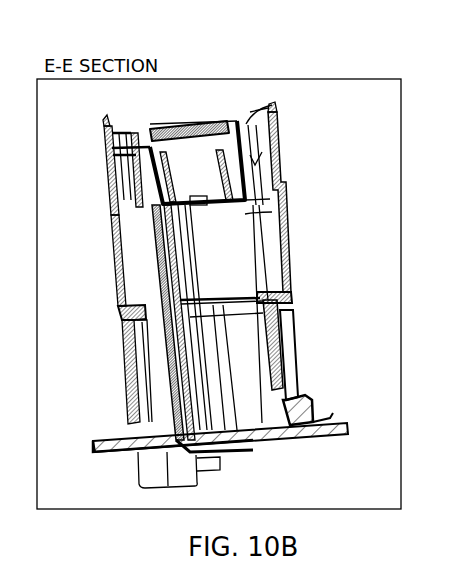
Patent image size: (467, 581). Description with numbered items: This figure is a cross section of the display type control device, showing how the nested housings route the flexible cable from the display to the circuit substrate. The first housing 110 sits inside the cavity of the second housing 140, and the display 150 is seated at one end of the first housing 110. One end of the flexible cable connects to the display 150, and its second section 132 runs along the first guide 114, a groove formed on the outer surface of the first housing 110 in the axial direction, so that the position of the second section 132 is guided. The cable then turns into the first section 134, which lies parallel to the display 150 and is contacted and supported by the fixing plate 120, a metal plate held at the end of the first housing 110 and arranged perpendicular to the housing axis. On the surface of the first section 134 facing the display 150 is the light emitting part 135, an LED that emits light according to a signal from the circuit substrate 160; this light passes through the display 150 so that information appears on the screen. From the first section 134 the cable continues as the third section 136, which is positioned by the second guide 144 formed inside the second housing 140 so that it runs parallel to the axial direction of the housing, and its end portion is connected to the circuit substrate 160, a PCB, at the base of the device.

The first housing 110 is at (103, 160).
The first guide 114 is at (278, 132).
The fixing plate 120 is at (262, 212).
The second section 132 is at (285, 163).
The first section 134 is at (262, 210).
The light emitting part 135 is at (283, 194).
The third section 136 is at (272, 312).
The second housing 140 is at (106, 269).
The second guide 144 is at (153, 240).
The display 150 is at (213, 124).
The circuit substrate 160 is at (97, 452).